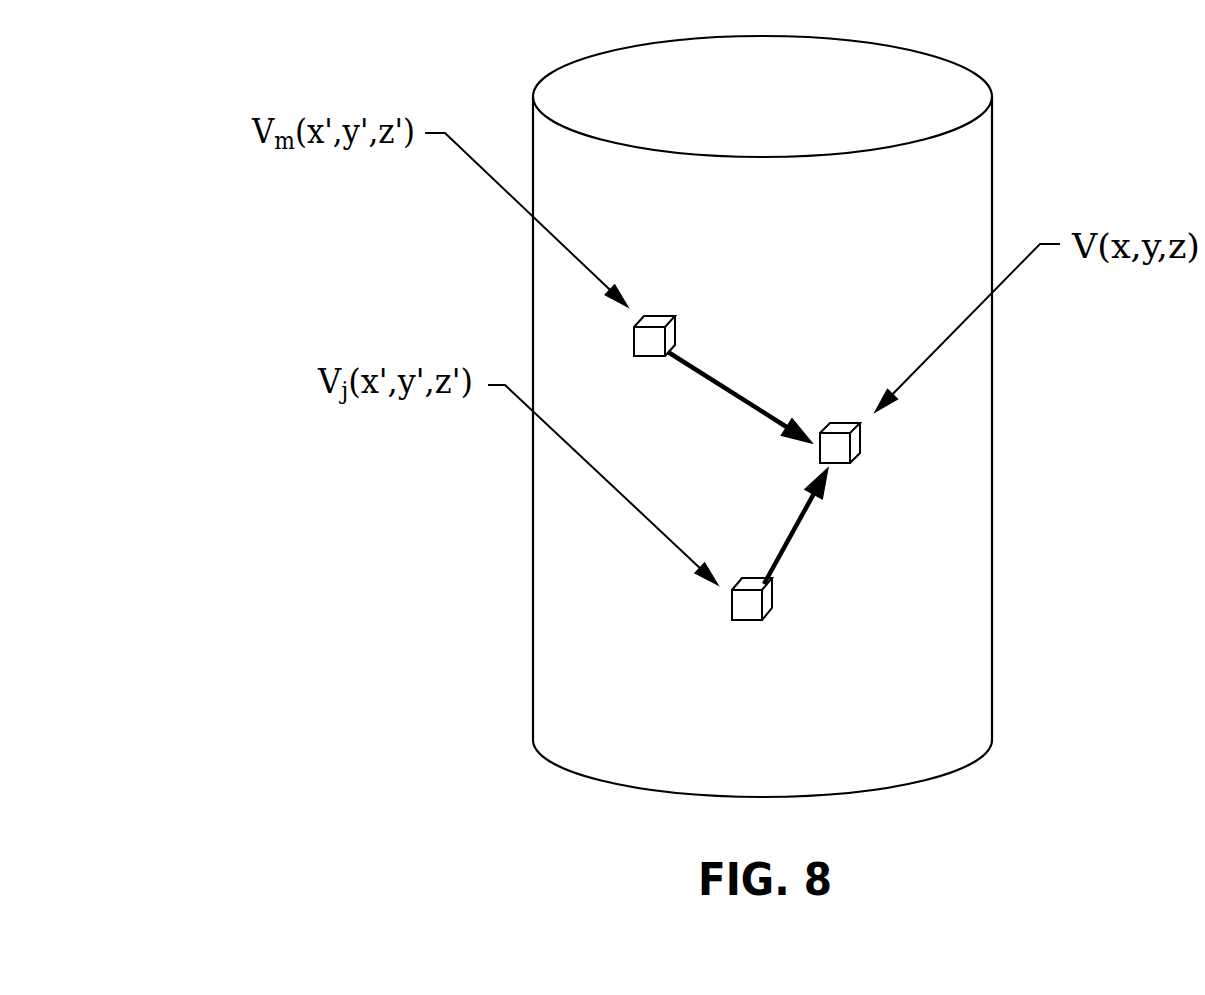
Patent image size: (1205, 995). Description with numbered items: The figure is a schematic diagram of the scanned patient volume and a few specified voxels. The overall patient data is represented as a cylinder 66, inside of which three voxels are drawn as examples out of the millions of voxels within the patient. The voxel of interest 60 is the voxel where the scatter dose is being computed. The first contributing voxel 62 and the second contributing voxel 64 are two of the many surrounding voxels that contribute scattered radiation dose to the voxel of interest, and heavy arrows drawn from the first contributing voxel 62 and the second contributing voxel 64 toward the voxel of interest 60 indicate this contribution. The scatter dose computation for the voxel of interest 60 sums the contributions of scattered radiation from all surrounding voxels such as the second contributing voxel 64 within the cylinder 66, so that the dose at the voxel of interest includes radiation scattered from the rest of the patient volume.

The voxel V(x,y,z) 60 is at (840, 465).
The voxel Vm(x',y',z') 62 is at (675, 335).
The voxel Vj(x',y',z') 64 is at (745, 622).
The cylinder 66 is at (993, 176).